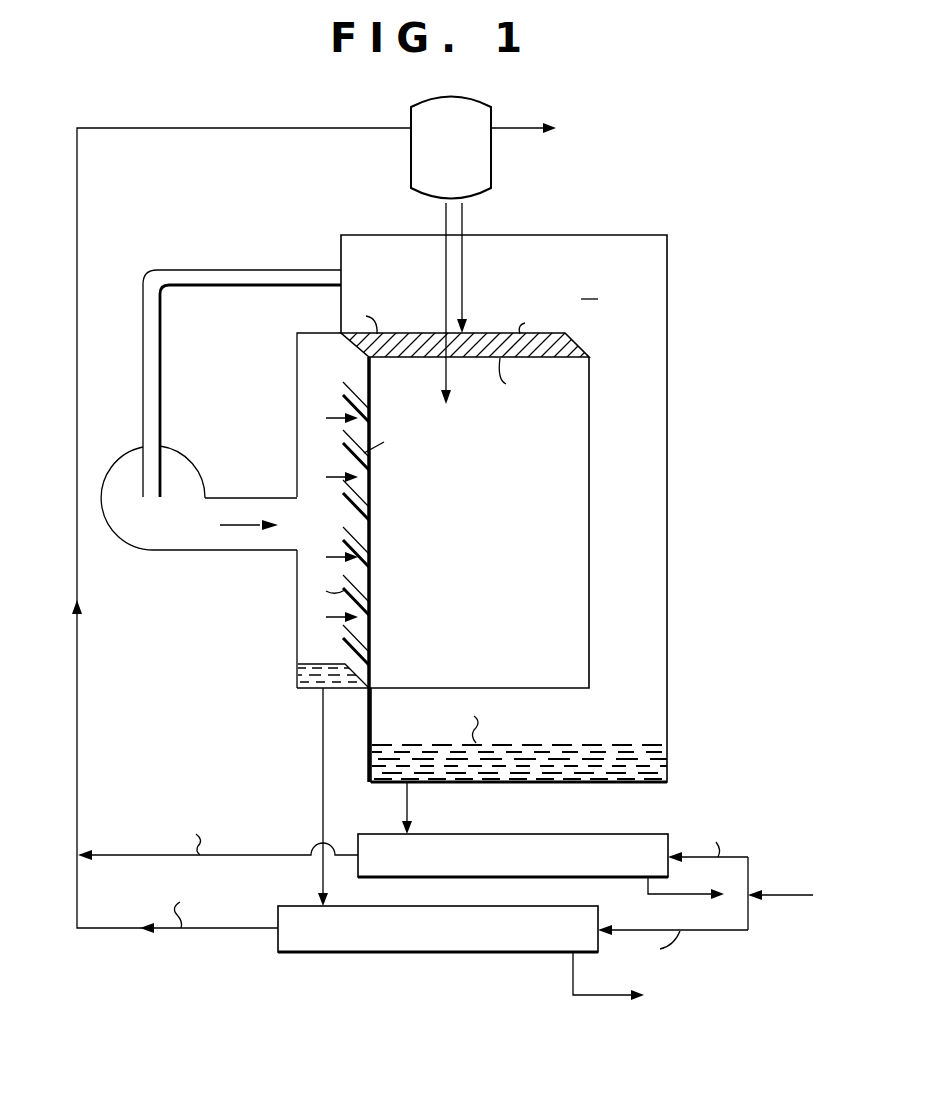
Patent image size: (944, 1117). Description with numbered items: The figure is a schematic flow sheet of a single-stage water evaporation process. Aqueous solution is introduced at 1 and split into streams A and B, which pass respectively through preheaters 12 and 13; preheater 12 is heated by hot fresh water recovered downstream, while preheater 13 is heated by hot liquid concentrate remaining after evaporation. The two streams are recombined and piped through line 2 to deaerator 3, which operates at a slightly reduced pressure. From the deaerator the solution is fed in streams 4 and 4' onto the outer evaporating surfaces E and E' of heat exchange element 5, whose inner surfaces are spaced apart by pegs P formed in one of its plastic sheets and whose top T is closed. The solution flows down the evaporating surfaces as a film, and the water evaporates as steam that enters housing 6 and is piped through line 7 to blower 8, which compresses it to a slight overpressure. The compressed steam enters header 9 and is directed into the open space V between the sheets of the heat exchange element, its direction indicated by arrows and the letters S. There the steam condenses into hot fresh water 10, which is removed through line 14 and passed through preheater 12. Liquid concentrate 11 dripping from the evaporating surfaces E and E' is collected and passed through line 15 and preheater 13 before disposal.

The aqueous solution inlet 1 is at (790, 894).
The line 2 is at (78, 698).
The deaerator 3 is at (460, 164).
The solution feed stream 4 is at (429, 303).
The solution feed stream 4' is at (488, 268).
The heat exchange element 5 is at (590, 492).
The housing 6 is at (498, 508).
The line 7 is at (221, 272).
The blower 8 is at (184, 534).
The header 9 is at (327, 532).
The hot fresh water 10 is at (299, 677).
The liquid concentrate 11 is at (525, 774).
The preheater 12 is at (439, 944).
The preheater 13 is at (508, 870).
The line 14 is at (322, 730).
The line 15 is at (410, 796).